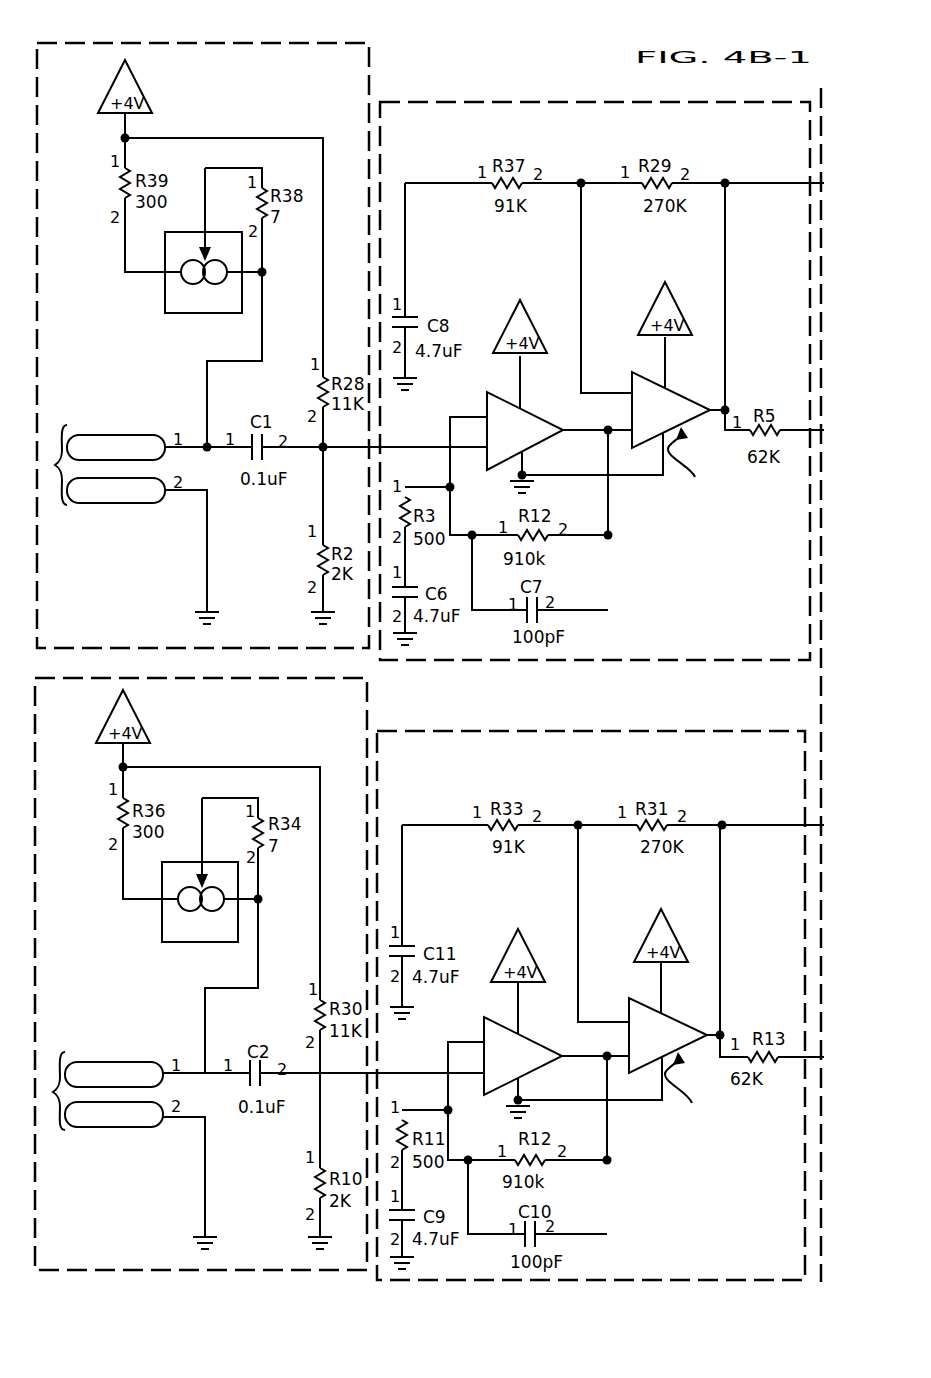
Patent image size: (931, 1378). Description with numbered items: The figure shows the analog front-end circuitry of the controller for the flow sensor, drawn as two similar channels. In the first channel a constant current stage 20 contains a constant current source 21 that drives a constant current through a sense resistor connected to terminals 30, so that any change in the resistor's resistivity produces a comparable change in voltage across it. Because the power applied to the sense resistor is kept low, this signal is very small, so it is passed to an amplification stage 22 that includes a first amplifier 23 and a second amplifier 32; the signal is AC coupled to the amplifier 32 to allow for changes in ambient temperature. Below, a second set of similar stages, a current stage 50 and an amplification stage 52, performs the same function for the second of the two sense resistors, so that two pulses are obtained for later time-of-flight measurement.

The constant current stage 20 is at (215, 46).
The constant current source 21 is at (165, 292).
The amplification stage 22 is at (560, 102).
The amplifier 23 is at (528, 406).
The terminals 30 is at (55, 465).
The amplifier 32 is at (686, 396).
The current stage 50 is at (367, 718).
The amplification stage 52 is at (556, 731).